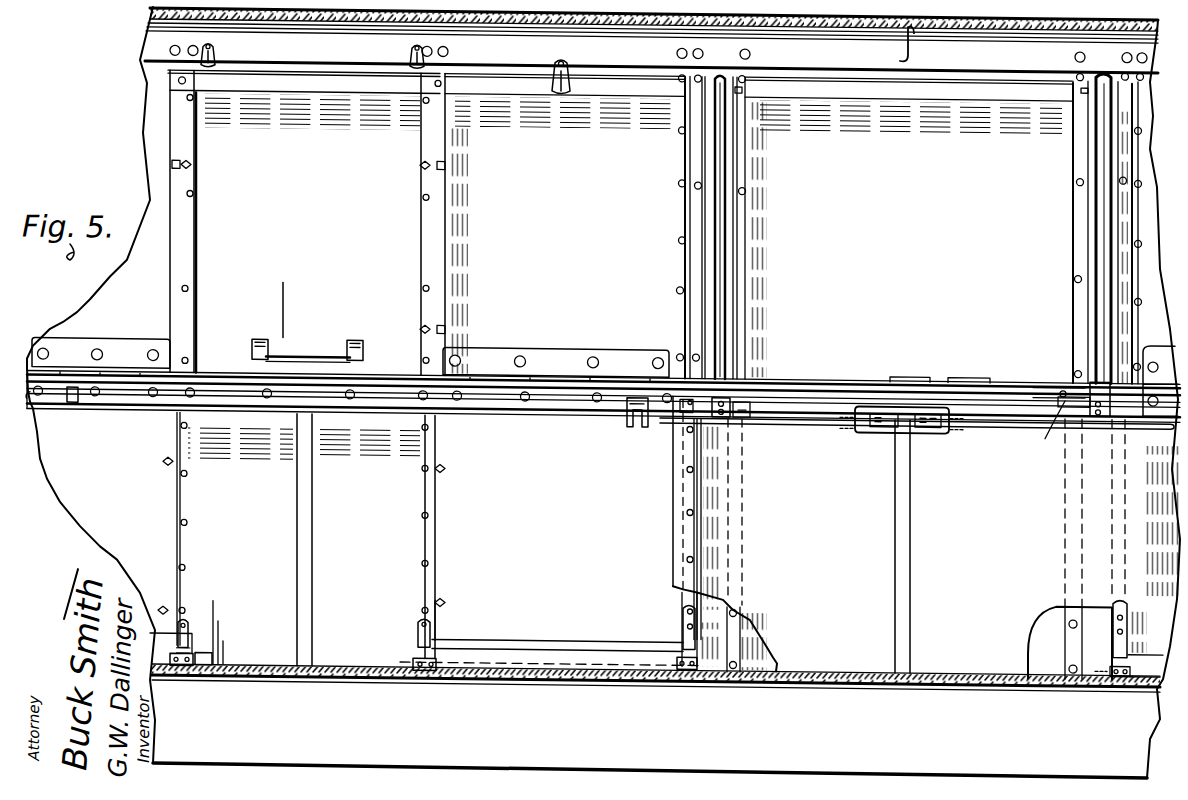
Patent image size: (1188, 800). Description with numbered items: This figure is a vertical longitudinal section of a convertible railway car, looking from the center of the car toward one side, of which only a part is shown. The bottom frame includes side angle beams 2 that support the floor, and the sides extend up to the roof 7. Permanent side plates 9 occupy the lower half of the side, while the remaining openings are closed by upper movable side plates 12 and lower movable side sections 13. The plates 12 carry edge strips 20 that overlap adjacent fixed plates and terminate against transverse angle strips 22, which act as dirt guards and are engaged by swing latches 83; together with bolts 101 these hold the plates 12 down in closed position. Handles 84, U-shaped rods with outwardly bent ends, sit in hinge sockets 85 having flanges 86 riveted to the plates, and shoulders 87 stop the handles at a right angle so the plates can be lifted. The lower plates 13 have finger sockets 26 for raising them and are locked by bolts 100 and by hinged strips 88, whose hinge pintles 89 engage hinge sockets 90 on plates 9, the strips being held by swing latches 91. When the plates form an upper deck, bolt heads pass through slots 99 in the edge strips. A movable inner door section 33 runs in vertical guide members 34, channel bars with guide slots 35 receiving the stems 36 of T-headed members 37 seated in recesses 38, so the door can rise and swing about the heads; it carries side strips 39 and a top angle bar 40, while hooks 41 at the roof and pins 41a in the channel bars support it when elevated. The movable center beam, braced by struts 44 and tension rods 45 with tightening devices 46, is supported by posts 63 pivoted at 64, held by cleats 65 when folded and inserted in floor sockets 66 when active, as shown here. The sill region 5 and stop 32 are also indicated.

The side angle beam 2 is at (120, 345).
The bottom corner bracket 5 is at (950, 665).
The roof 7 is at (817, 20).
The permanent side plate 9 is at (377, 536).
The upper movable side plate 12 is at (304, 222).
The lower movable side section 13 is at (487, 566).
The edge strip 20 is at (445, 247).
The transverse angle strip 22 is at (382, 81).
The finger socket 26 is at (548, 655).
The stop bolt 32 is at (565, 91).
The movable inner door section 33 is at (926, 372).
The vertical guide member 34 is at (728, 215).
The guide slot 35 is at (717, 251).
The stem 36 is at (722, 364).
The T-headed member 37 is at (712, 352).
The recess 38 is at (733, 406).
The strip 39 is at (678, 490).
The angle bar 40 is at (1042, 432).
The hook 41 is at (908, 80).
The pin 41a is at (738, 87).
The strut 44 is at (625, 424).
The tension rod 45 is at (917, 438).
The tightening device 46 is at (930, 425).
The post 63 is at (296, 552).
The pivot 64 is at (895, 420).
The cleat 65 is at (75, 404).
The socket 66 is at (902, 680).
The swing latch 83 is at (410, 50).
The handle 84 is at (308, 349).
The hinge socket 85 is at (366, 347).
The flange 86 is at (372, 318).
The shoulder 87 is at (280, 338).
The hinged strip 88 is at (470, 642).
The hinge pintle 89 is at (432, 681).
The hinge socket 90 is at (412, 650).
The swing latch 91 is at (682, 631).
The slot 99 is at (447, 326).
The bolt 100 is at (462, 593).
The bolt 101 is at (420, 165).